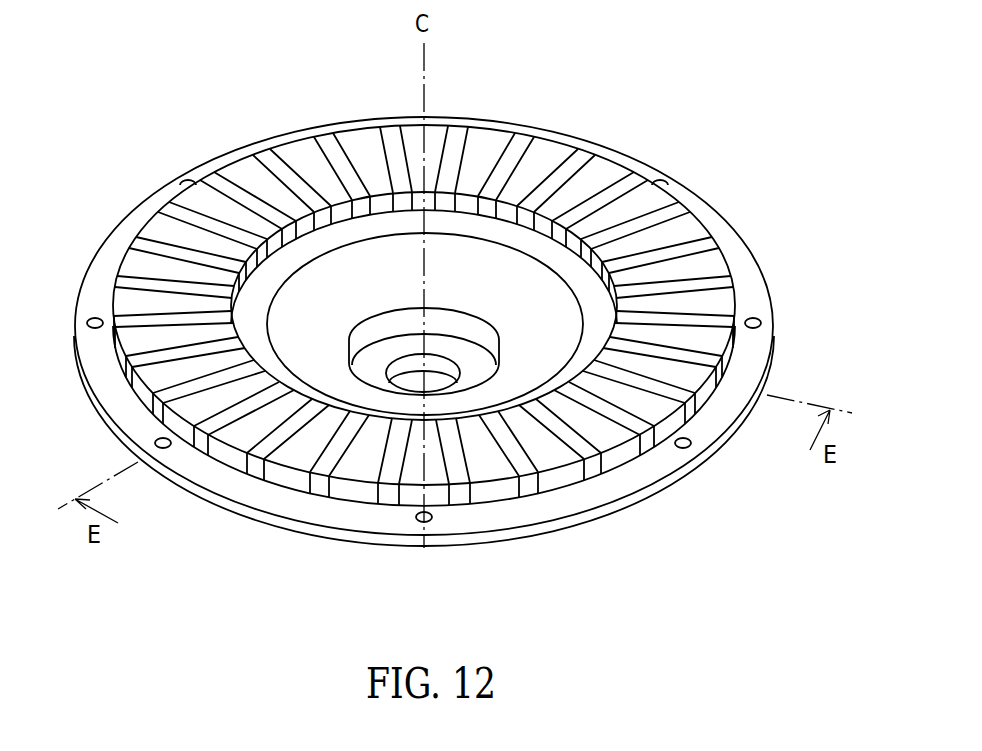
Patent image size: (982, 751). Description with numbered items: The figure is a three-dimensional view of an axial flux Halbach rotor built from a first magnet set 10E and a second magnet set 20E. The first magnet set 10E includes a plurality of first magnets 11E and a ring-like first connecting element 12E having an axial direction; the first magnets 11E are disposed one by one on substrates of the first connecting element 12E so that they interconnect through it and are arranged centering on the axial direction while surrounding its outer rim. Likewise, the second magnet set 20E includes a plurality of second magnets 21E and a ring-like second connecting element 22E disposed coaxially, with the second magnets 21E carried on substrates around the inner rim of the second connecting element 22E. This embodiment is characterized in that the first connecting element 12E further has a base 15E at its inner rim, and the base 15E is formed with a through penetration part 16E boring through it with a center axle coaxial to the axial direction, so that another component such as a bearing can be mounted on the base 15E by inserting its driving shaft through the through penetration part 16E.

The first magnet set 10E is at (680, 52).
The first magnets 11E is at (410, 127).
The first connecting element 12E is at (383, 133).
The base 15E is at (523, 290).
The through penetration part 16E is at (438, 387).
The second magnet set 20E is at (340, 588).
The second magnets 21E is at (244, 477).
The second connecting element 22E is at (311, 508).